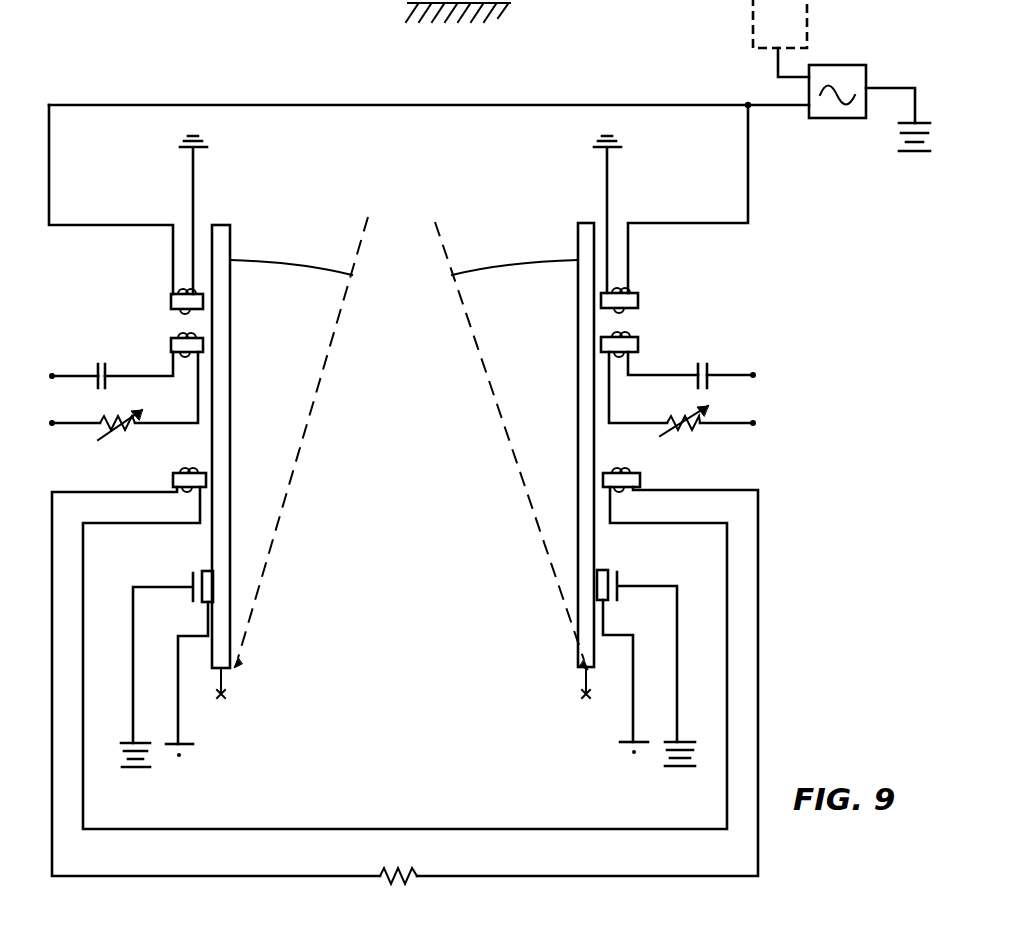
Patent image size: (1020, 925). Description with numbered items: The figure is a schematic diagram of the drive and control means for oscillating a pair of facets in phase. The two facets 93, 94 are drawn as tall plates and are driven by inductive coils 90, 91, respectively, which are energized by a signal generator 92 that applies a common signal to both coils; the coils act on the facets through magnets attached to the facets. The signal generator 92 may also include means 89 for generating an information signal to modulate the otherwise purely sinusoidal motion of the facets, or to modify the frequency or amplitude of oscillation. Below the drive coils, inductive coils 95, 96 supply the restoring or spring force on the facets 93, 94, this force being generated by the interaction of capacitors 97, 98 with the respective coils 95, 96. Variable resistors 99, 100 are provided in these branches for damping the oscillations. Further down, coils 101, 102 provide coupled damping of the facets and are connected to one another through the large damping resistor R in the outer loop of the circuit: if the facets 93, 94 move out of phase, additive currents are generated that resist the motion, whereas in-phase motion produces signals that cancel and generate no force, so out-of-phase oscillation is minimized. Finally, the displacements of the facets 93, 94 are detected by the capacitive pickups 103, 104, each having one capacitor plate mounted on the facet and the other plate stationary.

The means for generating an information signal 89 is at (790, 32).
The signal generator 92 is at (830, 65).
The facet 93 is at (230, 244).
The facet 94 is at (578, 244).
The inductive coil 90 is at (171, 300).
The inductive coil 91 is at (638, 300).
The inductive coil 95 is at (171, 346).
The inductive coil 96 is at (638, 345).
The capacitor 97 is at (97, 374).
The capacitor 98 is at (709, 372).
The variable resistor 99 is at (116, 438).
The variable resistor 100 is at (697, 437).
The coil 101 is at (175, 480).
The coil 102 is at (640, 475).
The capacitive pickup 103 is at (202, 572).
The capacitive pickup 104 is at (610, 570).
The damping resistor R is at (405, 685).